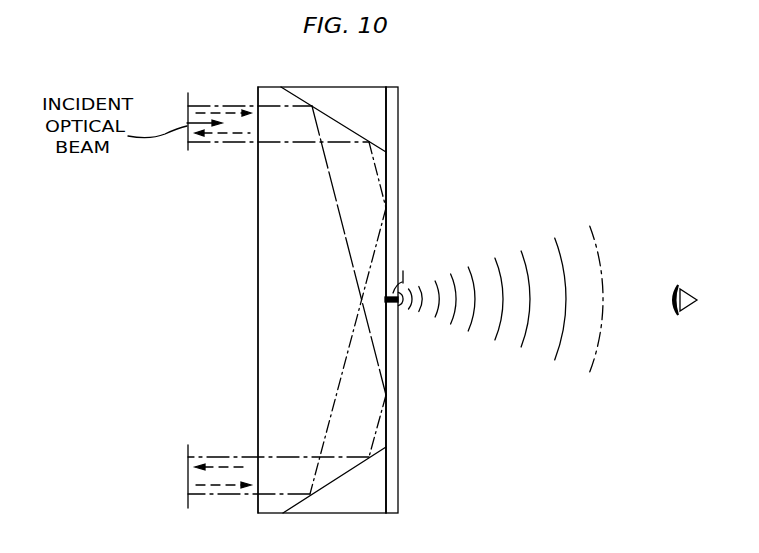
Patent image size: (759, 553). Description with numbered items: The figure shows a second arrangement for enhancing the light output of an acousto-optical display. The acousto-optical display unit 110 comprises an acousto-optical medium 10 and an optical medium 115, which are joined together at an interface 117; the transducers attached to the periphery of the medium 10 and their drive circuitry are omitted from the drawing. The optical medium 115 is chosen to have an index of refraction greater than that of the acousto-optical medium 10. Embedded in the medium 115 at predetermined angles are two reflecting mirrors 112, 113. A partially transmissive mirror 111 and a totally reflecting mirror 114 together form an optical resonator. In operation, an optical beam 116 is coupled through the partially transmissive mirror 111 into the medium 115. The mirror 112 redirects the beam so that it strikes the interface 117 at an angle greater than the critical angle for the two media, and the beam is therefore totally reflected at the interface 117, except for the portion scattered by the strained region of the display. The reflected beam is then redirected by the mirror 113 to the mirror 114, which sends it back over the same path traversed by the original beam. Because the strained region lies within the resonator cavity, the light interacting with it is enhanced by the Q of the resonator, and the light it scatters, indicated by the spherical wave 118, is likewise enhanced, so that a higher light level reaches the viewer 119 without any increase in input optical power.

The acousto-optical medium 10 is at (392, 107).
The acousto-optical display unit 110 is at (341, 76).
The partially transmissive mirror 111 is at (188, 98).
The reflecting mirror 112 is at (345, 128).
The reflecting mirror 113 is at (358, 465).
The totally reflecting mirror 114 is at (188, 462).
The optical medium 115 is at (275, 242).
The optical beam 116 is at (190, 128).
The interface 117 is at (386, 330).
The spherical wave 118 is at (597, 227).
The viewer 119 is at (685, 295).